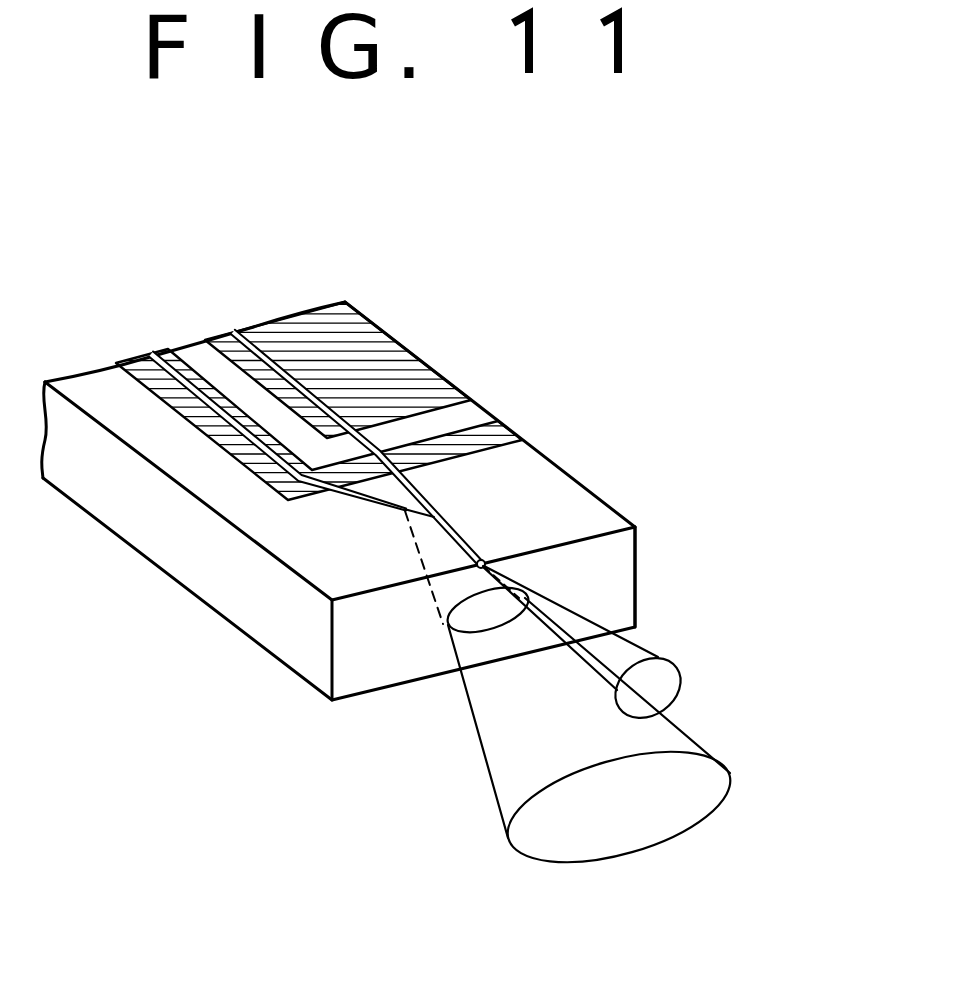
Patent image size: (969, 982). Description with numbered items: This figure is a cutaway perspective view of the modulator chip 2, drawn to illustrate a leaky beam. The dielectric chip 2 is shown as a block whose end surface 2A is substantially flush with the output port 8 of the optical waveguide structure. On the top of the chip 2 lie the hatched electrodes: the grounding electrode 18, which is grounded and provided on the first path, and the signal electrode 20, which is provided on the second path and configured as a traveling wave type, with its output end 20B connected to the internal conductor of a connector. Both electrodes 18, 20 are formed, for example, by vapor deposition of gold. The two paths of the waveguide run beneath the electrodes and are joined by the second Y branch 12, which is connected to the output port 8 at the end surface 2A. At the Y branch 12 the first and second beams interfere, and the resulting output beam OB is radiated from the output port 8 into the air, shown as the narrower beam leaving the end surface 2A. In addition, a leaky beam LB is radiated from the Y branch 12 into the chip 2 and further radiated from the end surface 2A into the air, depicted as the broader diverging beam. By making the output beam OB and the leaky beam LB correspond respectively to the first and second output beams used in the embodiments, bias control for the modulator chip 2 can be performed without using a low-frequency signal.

The modulator chip 2 is at (560, 487).
The end surface 2A is at (622, 545).
The output port 8 is at (484, 559).
The second Y branch 12 is at (403, 509).
The grounding electrode 18 is at (337, 335).
The signal electrode 20 is at (140, 372).
The output end 20B is at (503, 434).
The output beam OB is at (652, 649).
The leaky beam LB is at (488, 782).